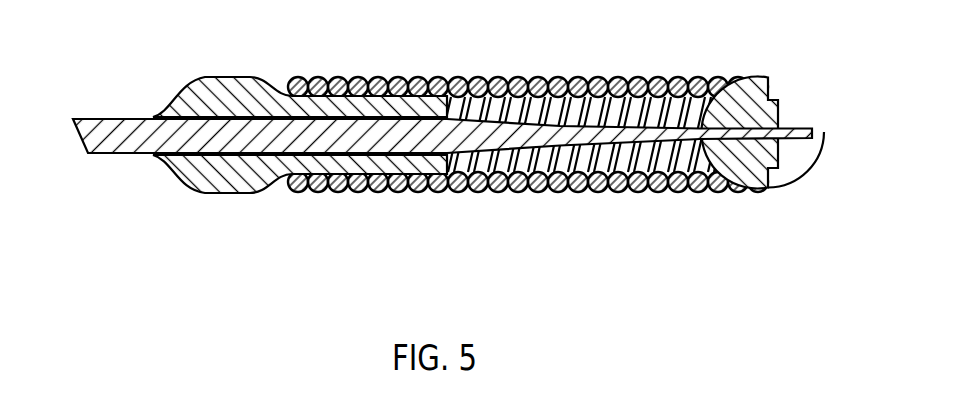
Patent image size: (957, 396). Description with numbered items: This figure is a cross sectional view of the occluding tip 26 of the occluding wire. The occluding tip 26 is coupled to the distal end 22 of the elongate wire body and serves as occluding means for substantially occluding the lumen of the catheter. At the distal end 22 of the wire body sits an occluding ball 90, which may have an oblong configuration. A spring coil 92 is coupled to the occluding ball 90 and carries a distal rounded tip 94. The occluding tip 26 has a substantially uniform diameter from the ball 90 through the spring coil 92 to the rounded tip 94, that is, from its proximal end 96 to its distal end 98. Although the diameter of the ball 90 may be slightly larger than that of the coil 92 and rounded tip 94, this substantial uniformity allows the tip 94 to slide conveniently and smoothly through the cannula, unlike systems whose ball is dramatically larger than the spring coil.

The distal end 22 is at (110, 154).
The occluding tip 26 is at (168, 80).
The occluding ball 90 is at (240, 194).
The spring coil 92 is at (480, 84).
The distal rounded tip 94 is at (818, 102).
The proximal end 96 is at (185, 208).
The distal end 98 is at (807, 192).